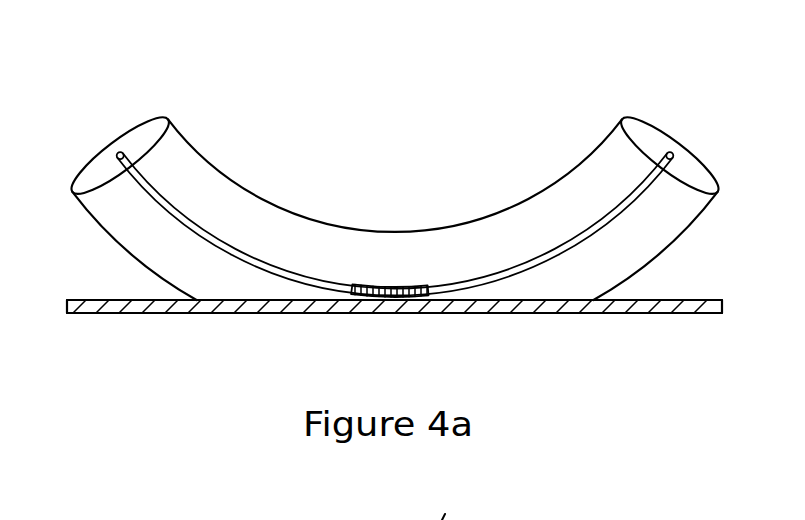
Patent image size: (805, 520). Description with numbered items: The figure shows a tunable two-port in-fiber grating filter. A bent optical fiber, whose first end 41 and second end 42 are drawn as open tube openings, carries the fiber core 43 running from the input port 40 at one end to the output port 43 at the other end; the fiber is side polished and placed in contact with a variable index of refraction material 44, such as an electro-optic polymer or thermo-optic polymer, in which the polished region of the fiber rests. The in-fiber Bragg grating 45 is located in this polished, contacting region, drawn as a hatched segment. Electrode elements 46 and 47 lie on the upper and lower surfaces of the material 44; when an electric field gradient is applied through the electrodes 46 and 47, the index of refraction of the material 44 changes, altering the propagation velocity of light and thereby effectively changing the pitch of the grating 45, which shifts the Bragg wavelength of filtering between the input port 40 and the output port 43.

The input port 40 is at (123, 151).
The bent tube (left portion) 41 is at (167, 118).
The bent tube right end opening 42 is at (648, 120).
The output port 43 is at (671, 156).
The variable index of refraction material 44 is at (722, 307).
The in-fiber grating 45 is at (378, 280).
The electrode element 46 is at (688, 298).
The electrode element 47 is at (685, 316).